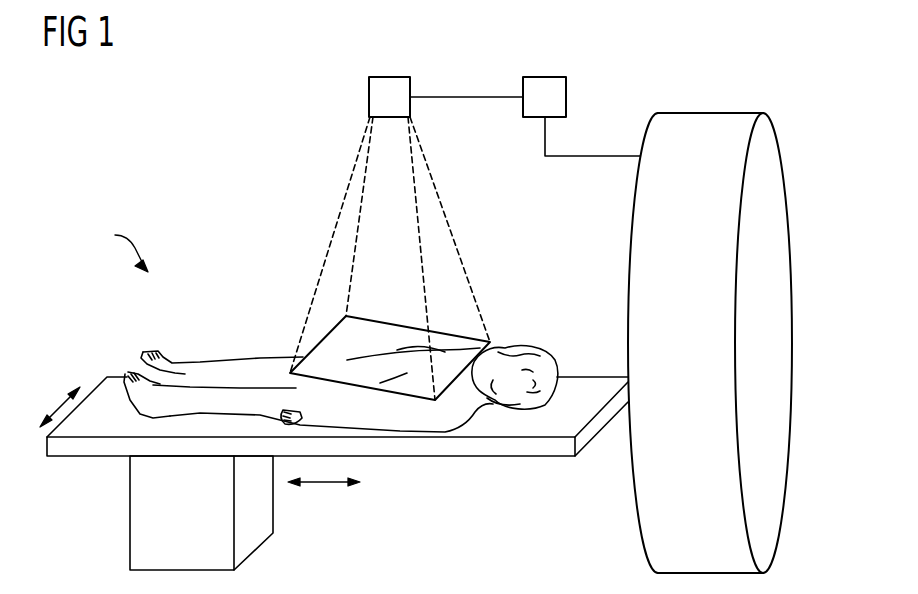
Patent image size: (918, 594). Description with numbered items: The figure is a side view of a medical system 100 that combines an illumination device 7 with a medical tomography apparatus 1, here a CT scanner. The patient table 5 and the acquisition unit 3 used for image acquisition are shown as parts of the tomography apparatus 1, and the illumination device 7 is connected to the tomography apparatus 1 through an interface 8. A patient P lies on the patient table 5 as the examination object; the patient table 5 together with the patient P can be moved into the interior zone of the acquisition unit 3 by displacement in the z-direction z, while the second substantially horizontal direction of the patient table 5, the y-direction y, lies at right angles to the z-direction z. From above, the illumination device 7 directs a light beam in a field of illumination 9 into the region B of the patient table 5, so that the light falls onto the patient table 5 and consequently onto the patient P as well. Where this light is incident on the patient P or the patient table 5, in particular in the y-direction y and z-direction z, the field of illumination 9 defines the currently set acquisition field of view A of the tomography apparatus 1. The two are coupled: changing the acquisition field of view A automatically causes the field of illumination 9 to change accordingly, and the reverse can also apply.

The medical system 100 is at (652, 66).
The medical tomography apparatus 1 is at (782, 112).
The acquisition unit 3 is at (772, 200).
The patient table 5 is at (418, 448).
The illumination device 7 is at (369, 97).
The interface 8 is at (566, 97).
The field of illumination 9 is at (410, 249).
The acquisition field of view A is at (390, 358).
The patient P is at (535, 355).
The region B is at (124, 247).
The y-direction y is at (64, 402).
The z-direction z is at (325, 486).